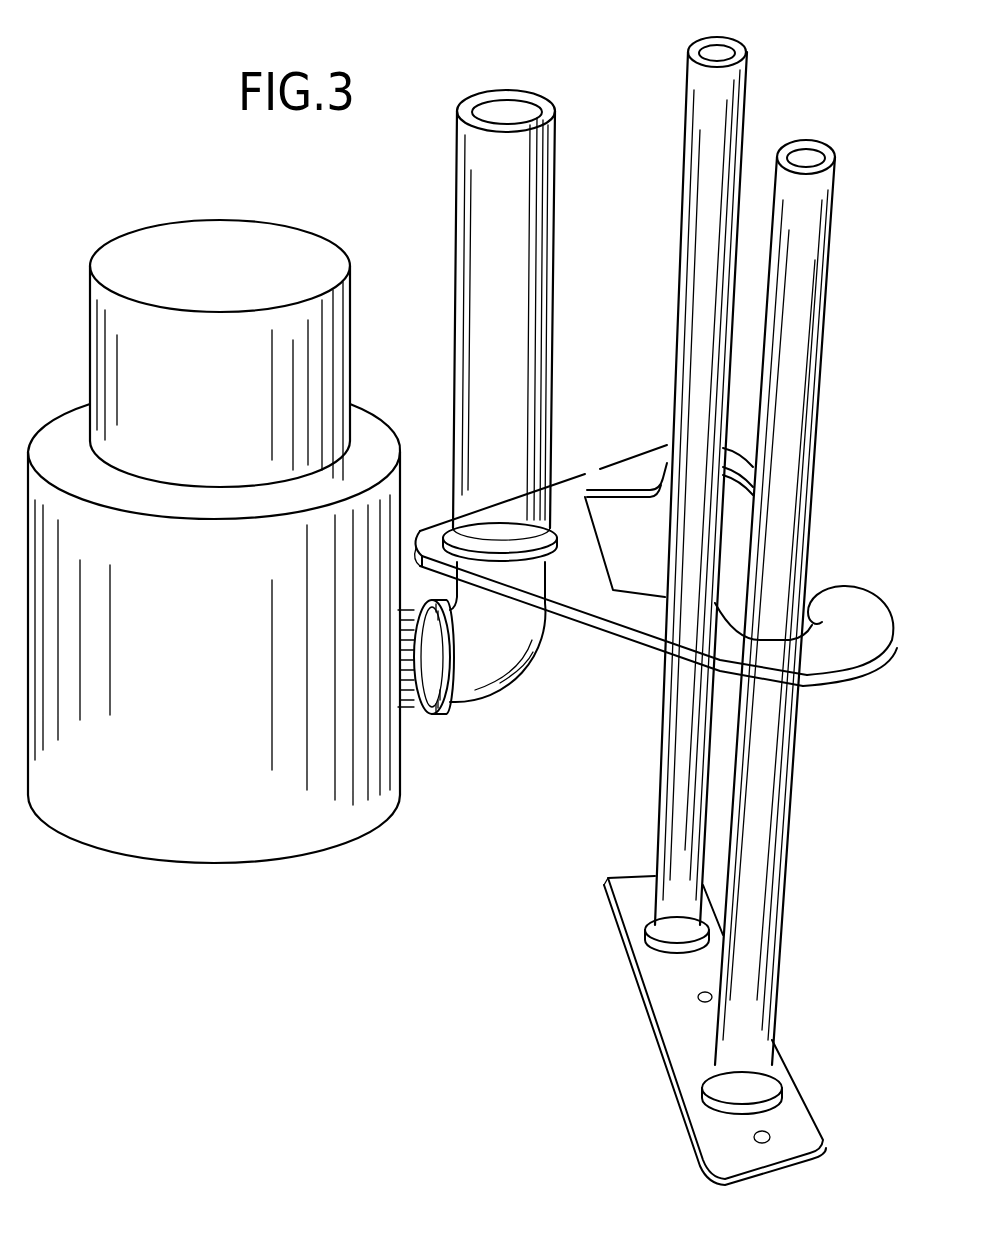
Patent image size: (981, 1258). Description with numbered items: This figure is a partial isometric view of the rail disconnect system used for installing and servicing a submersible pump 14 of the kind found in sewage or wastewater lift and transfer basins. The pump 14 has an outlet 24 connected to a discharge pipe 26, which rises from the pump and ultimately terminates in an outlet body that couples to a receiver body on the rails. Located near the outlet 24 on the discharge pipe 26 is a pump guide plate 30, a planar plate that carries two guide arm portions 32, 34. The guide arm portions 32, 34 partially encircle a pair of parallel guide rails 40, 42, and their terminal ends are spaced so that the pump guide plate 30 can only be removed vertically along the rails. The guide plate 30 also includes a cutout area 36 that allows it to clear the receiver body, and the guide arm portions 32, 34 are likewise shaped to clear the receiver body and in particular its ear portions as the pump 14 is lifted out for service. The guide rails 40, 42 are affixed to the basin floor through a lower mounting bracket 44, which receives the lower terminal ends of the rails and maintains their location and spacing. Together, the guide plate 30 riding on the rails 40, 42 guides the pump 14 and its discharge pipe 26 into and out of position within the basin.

The pump 14 is at (182, 742).
The outlet 24 is at (413, 717).
The discharge pipe 26 is at (533, 185).
The pump guide plate 30 is at (563, 583).
The guide arm portion 32 is at (862, 612).
The guide arm portion 34 is at (667, 453).
The cutout area 36 is at (647, 585).
The guide rail 40 is at (745, 86).
The guide rail 42 is at (833, 183).
The lower mounting bracket 44 is at (813, 1117).